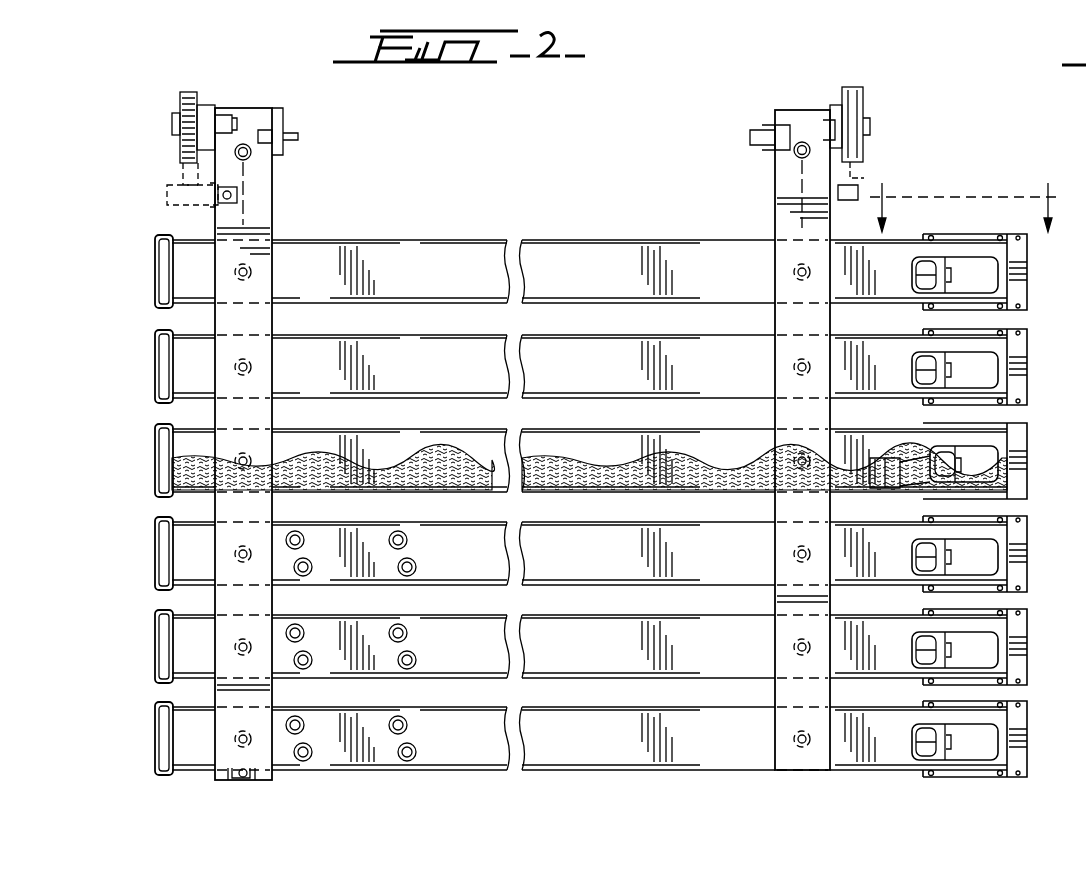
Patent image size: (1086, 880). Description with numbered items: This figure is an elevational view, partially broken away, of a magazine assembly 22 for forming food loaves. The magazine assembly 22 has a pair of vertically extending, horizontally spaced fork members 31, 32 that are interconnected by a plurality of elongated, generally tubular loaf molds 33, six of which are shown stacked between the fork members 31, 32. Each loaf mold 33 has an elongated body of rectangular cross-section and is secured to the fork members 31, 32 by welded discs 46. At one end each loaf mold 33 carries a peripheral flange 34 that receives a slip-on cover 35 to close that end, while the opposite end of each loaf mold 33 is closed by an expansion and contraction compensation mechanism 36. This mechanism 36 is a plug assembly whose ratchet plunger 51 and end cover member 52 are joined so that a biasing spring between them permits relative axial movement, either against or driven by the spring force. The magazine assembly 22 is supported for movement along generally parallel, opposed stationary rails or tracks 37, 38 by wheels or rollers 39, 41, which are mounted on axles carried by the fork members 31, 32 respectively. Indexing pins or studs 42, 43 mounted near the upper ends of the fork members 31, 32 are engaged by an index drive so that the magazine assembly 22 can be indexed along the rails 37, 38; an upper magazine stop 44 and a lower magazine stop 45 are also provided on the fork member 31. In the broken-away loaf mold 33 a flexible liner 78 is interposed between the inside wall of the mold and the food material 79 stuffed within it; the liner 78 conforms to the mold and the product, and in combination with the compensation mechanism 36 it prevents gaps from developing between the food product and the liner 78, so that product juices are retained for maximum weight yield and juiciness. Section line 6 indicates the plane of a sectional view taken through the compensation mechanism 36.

The magazine assembly 22 is at (423, 215).
The fork member 31 is at (270, 225).
The fork member 32 is at (777, 185).
The loaf mold 33 is at (732, 281).
The peripheral flange 34 is at (165, 355).
The slip-on cover 35 is at (165, 448).
The expansion and contraction compensation mechanism 36 is at (945, 232).
The rail 37 is at (174, 170).
The rail 38 is at (864, 174).
The roller 39 is at (195, 94).
The roller 41 is at (862, 100).
The indexing pin 42 is at (290, 127).
The indexing pin 43 is at (750, 134).
The upper magazine stop 44 is at (210, 202).
The lower magazine stop 45 is at (230, 773).
The welded disc 46 is at (795, 278).
The ratchet plunger 51 is at (942, 480).
The end cover member 52 is at (878, 480).
The flexible liner 78 is at (430, 472).
The food material 79 is at (560, 480).
The section line 6 is at (963, 204).